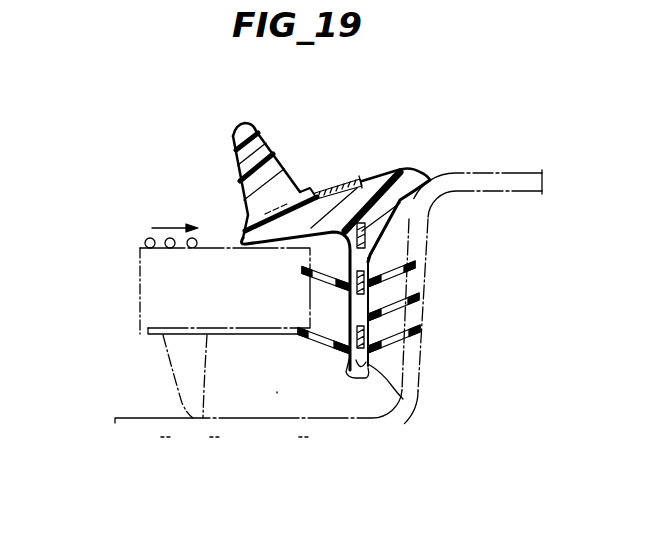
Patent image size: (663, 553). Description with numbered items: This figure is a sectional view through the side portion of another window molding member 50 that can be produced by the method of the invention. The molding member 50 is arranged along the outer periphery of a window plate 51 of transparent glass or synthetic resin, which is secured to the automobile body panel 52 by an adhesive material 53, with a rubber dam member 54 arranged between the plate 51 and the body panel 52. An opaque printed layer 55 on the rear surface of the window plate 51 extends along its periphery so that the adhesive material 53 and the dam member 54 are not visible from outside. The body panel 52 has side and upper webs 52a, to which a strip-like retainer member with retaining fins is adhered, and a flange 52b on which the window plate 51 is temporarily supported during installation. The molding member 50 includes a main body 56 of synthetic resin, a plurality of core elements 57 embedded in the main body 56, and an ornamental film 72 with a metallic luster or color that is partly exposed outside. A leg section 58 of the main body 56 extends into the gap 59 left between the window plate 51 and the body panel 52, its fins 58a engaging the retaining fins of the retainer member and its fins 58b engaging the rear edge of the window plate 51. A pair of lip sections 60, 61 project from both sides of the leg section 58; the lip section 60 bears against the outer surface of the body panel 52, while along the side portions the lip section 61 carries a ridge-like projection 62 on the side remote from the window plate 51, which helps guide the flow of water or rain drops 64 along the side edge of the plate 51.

The window molding member 50 is at (362, 177).
The window plate 51 is at (140, 288).
The automobile body panel 52 is at (513, 172).
The side and upper webs of body panel 52a is at (428, 304).
The flange of body panel 52b is at (257, 437).
The adhesive material 53 is at (276, 392).
The rubber dam member 54 is at (172, 378).
The opaque printed layer 55 is at (148, 335).
The main body 56 is at (382, 176).
The core elements 57 is at (404, 400).
The leg section 58 is at (362, 378).
The fins of leg section 58a is at (410, 354).
The fins of leg section 58b is at (325, 348).
The gap 59 is at (396, 243).
The lip section 60 is at (423, 182).
The lip section 61 is at (290, 236).
The projection 62 is at (245, 124).
The water or rain drops 64 is at (148, 241).
The ornamental film 72 is at (330, 184).